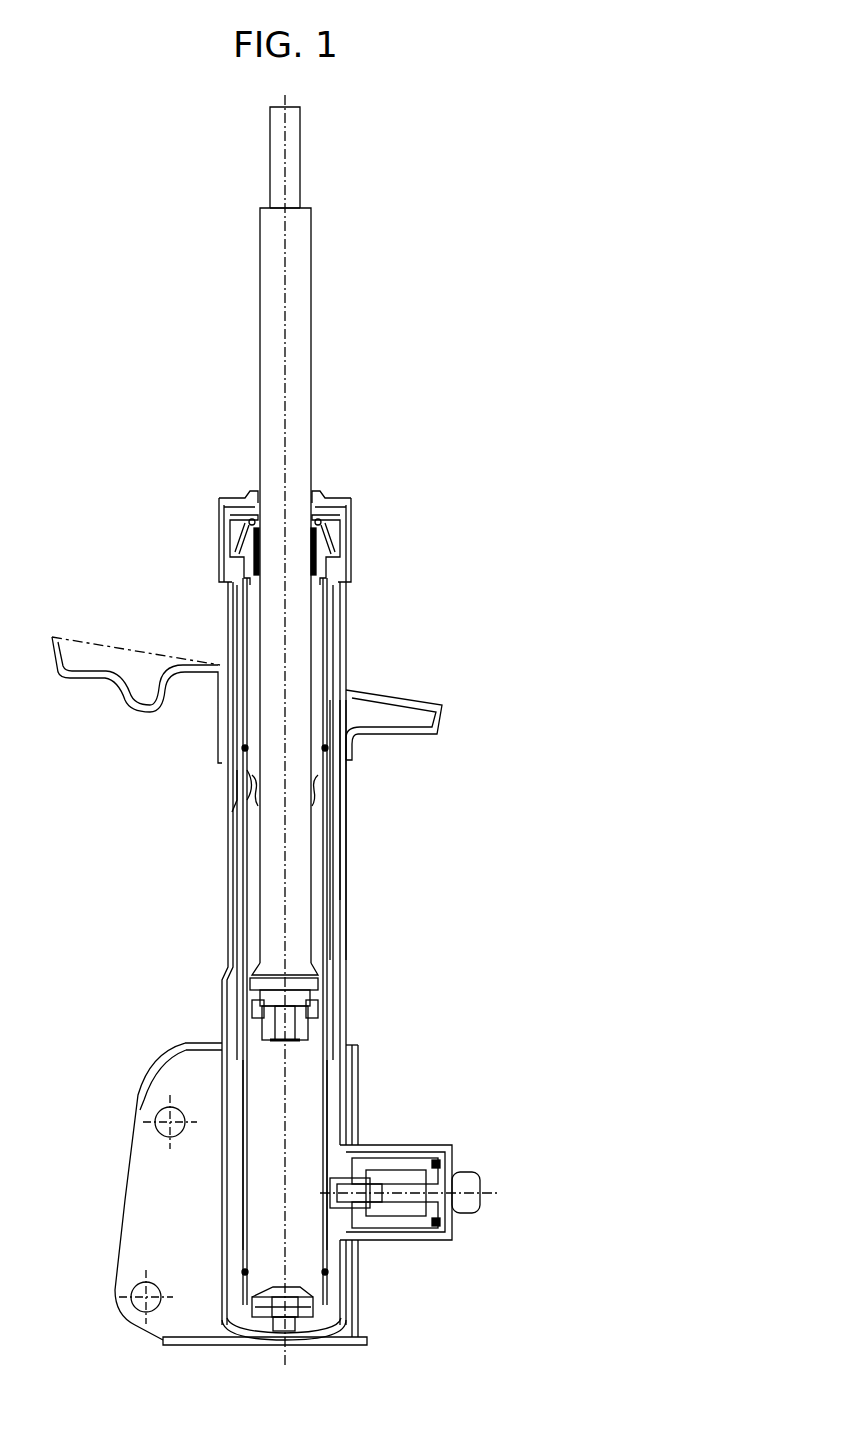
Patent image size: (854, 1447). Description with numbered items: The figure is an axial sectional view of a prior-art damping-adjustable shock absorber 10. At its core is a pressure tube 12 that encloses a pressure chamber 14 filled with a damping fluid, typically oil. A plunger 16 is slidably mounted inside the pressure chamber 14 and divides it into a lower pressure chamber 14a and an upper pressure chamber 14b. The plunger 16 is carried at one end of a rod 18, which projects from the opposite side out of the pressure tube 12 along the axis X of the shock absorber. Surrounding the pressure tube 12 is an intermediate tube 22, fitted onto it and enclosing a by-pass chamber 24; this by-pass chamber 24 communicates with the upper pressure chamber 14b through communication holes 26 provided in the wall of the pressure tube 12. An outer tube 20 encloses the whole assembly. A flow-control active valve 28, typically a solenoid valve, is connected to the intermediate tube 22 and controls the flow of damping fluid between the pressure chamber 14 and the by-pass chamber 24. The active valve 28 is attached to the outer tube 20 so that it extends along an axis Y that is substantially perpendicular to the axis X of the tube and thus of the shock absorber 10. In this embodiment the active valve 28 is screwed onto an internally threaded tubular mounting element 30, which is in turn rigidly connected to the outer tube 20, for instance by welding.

The damping-adjustable shock absorber 10 is at (373, 829).
The pressure tube 12 is at (325, 598).
The pressure chamber 14 is at (315, 637).
The lower pressure chamber 14a is at (305, 1073).
The upper pressure chamber 14b is at (252, 858).
The plunger 16 is at (315, 995).
The rod 18 is at (300, 297).
The outer tube 20 is at (343, 793).
The intermediate tube 22 is at (335, 918).
The by-pass chamber 24 is at (330, 870).
The communication holes 26 is at (245, 787).
The flow-control active valve 28 is at (380, 1215).
The tubular mounting element 30 is at (405, 1150).
The axis of the shock absorber x is at (285, 418).
The axis of the active valve y is at (455, 1218).